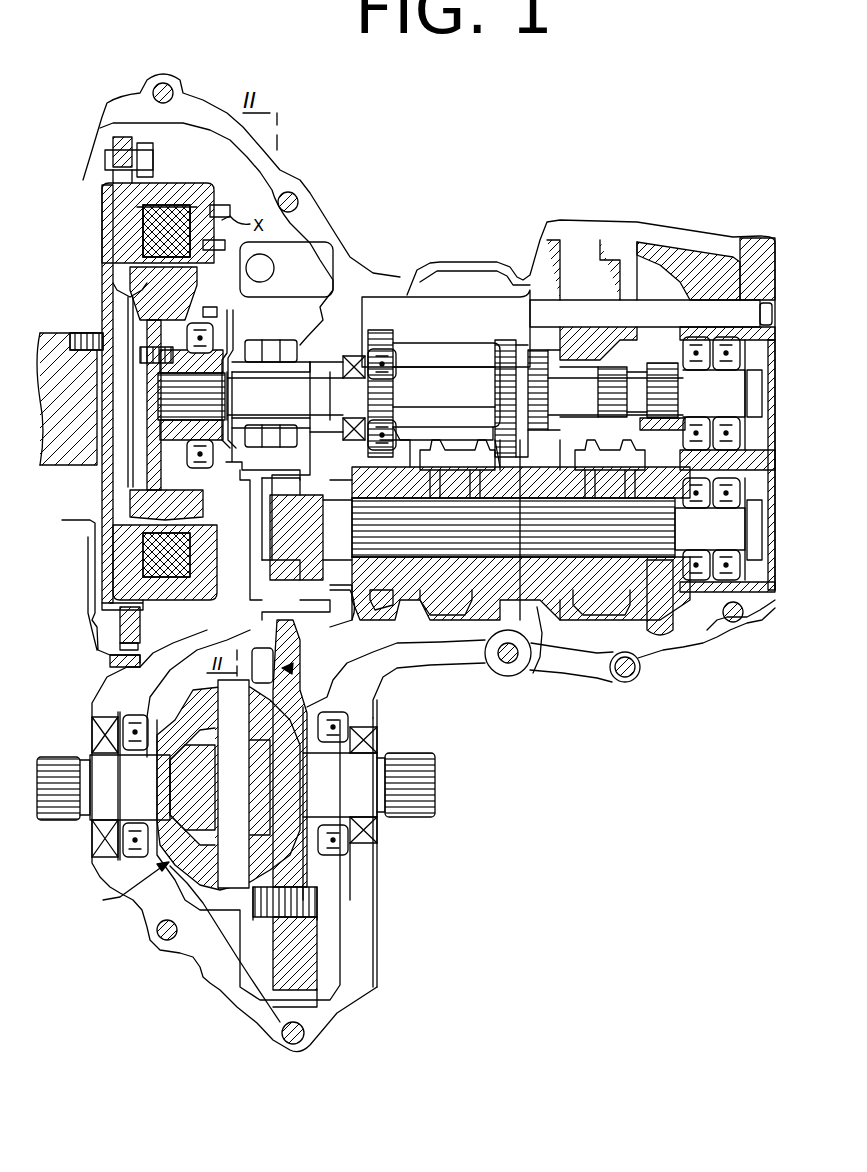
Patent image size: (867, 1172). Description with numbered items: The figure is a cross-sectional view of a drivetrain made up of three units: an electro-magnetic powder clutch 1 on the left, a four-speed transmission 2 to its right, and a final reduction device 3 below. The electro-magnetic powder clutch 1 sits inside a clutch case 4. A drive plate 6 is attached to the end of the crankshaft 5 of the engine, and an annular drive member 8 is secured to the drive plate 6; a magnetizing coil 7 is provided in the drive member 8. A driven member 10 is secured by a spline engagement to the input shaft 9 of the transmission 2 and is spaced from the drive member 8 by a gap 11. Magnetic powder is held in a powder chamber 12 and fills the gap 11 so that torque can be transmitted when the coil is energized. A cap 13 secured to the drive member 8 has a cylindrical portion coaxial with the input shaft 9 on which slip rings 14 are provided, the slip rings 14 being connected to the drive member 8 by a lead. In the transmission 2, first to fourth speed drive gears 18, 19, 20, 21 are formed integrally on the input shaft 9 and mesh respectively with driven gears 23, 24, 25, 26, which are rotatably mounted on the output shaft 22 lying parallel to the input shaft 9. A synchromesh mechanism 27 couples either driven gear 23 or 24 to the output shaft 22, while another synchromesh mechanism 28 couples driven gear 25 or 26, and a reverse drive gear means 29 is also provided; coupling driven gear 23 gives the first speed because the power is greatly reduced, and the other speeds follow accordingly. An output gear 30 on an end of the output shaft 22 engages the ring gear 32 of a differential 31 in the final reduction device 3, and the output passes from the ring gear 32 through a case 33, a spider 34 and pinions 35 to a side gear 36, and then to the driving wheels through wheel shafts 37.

The electro-magnetic powder clutch 1 is at (196, 598).
The four-speed transmission 2 is at (656, 220).
The final reduction device 3 is at (131, 926).
The clutch case 4 is at (302, 198).
The crankshaft 5 is at (70, 460).
The drive plate 6 is at (100, 216).
The magnetizing coil 7 is at (208, 212).
The annular drive member 8 is at (172, 190).
The input shaft 9 is at (450, 410).
The driven member 10 is at (147, 323).
The gap 11 is at (135, 268).
The powder chamber 12 is at (126, 285).
The cap 13 is at (229, 340).
The slip rings 14 is at (272, 352).
The 1st speed drive gear 18 is at (662, 368).
The 2nd speed drive gear 19 is at (552, 398).
The 3rd speed drive gear 20 is at (495, 360).
The 4th speed drive gear 21 is at (398, 343).
The output shaft 22 is at (724, 541).
The driven gear 23 is at (660, 640).
The driven gear 24 is at (533, 673).
The driven gear 25 is at (490, 661).
The driven gear 26 is at (372, 612).
The synchromesh mechanism 27 is at (598, 615).
The synchromesh mechanism 28 is at (457, 610).
The reverse drive gear means 29 is at (617, 368).
The output gear 30 is at (298, 490).
The differential 31 is at (122, 890).
The ring gear 32 is at (267, 995).
The case 33 is at (203, 880).
The spider 34 is at (240, 883).
The pinions 35 is at (183, 690).
The side gear 36 is at (188, 826).
The wheel shafts 37 is at (62, 762).